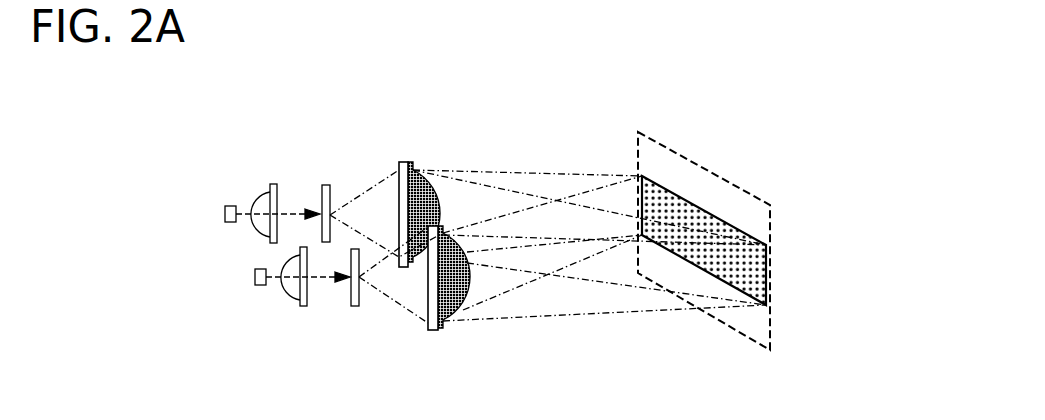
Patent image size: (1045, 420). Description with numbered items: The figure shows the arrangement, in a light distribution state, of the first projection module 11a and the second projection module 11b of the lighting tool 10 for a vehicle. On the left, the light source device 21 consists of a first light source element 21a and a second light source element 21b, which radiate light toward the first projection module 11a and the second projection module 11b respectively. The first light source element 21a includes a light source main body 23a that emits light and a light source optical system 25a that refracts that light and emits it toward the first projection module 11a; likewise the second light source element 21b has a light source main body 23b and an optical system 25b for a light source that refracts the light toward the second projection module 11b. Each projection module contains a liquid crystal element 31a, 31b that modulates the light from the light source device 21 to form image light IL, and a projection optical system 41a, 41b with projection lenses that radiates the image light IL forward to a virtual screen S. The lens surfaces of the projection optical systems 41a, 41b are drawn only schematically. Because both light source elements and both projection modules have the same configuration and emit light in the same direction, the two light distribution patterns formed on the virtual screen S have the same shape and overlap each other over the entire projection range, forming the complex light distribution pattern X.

The lighting tool for a vehicle 10 is at (580, 88).
The light source device 21 is at (112, 143).
The first light source element 21a is at (175, 122).
The second light source element 21b is at (175, 245).
The light source main body 23a is at (230, 205).
The light source main body 23b is at (260, 287).
The light source optical system 25a is at (265, 189).
The optical system for a light source 25b is at (291, 256).
The liquid crystal element 31a is at (325, 184).
The liquid crystal element 31b is at (354, 309).
The projection optical system 41a is at (417, 160).
The projection optical system 41b is at (445, 331).
The first projection module 11a is at (446, 121).
The second projection module 11b is at (489, 358).
The image light IL is at (358, 195).
The virtual screen S is at (749, 194).
The complex light distribution pattern X is at (691, 190).